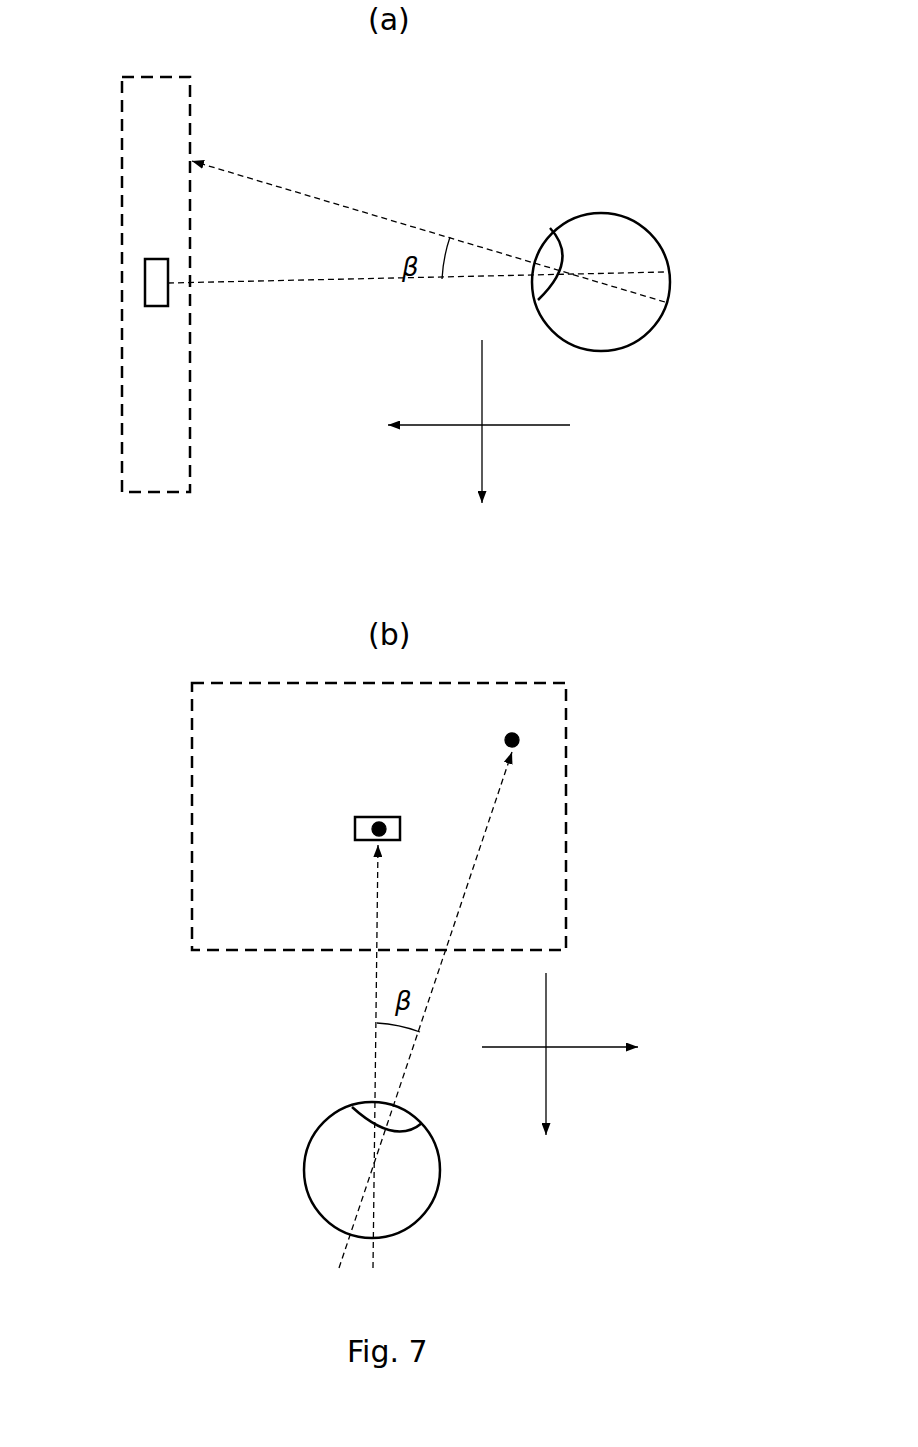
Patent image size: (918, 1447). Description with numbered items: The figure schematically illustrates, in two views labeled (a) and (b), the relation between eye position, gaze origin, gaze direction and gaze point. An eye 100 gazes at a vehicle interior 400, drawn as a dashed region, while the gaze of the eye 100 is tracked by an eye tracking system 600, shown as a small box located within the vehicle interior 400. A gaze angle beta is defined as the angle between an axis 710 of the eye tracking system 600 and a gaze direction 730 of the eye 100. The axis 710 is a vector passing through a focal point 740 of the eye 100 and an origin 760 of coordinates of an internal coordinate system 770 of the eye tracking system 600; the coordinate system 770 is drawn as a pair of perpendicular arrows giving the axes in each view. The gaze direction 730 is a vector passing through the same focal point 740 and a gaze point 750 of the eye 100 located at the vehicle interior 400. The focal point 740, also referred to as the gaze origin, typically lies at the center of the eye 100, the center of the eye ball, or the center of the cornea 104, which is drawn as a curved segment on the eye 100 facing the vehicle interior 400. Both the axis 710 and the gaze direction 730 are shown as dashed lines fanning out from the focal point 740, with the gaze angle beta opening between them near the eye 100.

The eye 100 is at (600, 207).
The cornea 104 is at (552, 250).
The vehicle interior 400 is at (190, 102).
The eye tracking system 600 is at (145, 300).
The axis 710 is at (335, 281).
The gaze direction 730 is at (333, 202).
The focal point 740 is at (603, 294).
The gaze point 750 is at (512, 727).
The origin 760 is at (169, 286).
The internal coordinate system 770 is at (402, 370).